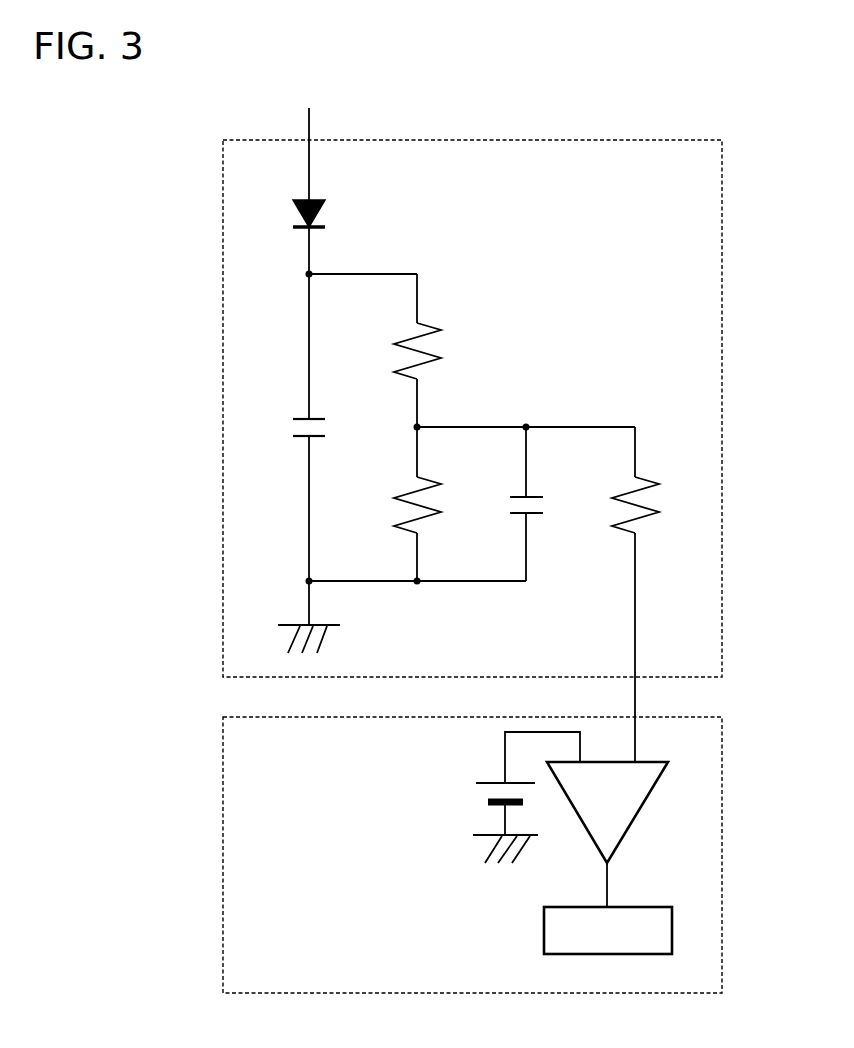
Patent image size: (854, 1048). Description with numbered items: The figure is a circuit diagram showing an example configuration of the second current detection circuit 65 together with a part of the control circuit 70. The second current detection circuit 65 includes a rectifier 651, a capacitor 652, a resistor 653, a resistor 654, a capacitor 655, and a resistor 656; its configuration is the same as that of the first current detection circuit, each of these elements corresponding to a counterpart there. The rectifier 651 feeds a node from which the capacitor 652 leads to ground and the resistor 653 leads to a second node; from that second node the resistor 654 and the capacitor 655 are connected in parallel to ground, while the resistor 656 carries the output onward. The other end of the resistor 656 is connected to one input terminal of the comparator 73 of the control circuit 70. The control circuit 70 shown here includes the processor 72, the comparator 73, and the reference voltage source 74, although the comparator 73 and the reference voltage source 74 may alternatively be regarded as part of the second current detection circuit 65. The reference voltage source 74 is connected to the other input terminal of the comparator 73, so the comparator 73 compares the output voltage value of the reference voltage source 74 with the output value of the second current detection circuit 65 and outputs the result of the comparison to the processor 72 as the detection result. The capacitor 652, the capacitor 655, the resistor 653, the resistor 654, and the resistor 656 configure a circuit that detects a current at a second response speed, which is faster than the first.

The second current detection circuit 65 is at (658, 140).
The rectifier 651 is at (315, 201).
The capacitor 652 is at (318, 418).
The resistor 653 is at (430, 325).
The resistor 654 is at (425, 478).
The capacitor 655 is at (535, 497).
The resistor 656 is at (643, 478).
The control circuit 70 is at (724, 805).
The processor 72 is at (635, 907).
The comparator 73 is at (627, 841).
The reference voltage source 74 is at (492, 782).